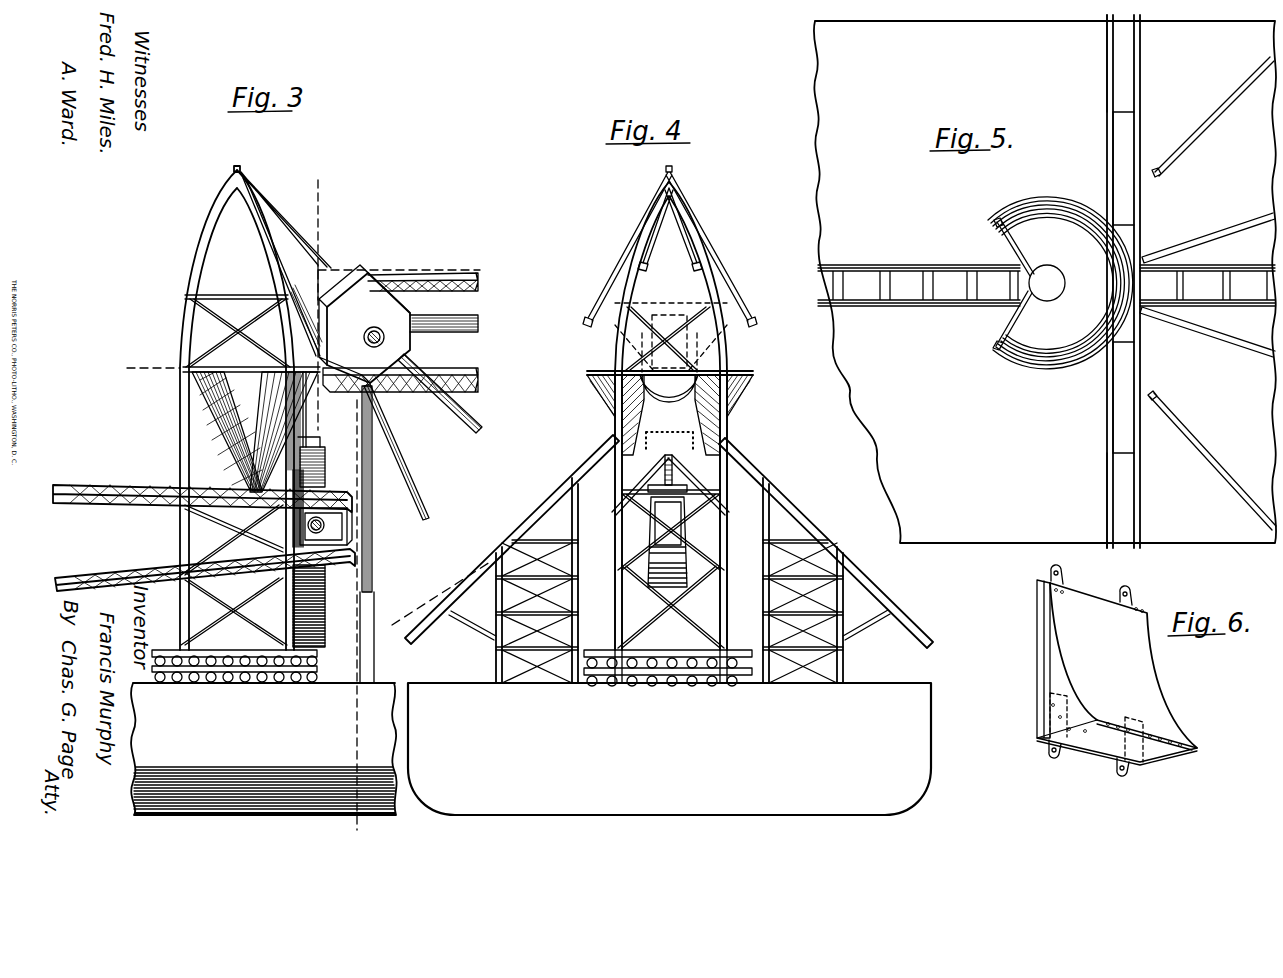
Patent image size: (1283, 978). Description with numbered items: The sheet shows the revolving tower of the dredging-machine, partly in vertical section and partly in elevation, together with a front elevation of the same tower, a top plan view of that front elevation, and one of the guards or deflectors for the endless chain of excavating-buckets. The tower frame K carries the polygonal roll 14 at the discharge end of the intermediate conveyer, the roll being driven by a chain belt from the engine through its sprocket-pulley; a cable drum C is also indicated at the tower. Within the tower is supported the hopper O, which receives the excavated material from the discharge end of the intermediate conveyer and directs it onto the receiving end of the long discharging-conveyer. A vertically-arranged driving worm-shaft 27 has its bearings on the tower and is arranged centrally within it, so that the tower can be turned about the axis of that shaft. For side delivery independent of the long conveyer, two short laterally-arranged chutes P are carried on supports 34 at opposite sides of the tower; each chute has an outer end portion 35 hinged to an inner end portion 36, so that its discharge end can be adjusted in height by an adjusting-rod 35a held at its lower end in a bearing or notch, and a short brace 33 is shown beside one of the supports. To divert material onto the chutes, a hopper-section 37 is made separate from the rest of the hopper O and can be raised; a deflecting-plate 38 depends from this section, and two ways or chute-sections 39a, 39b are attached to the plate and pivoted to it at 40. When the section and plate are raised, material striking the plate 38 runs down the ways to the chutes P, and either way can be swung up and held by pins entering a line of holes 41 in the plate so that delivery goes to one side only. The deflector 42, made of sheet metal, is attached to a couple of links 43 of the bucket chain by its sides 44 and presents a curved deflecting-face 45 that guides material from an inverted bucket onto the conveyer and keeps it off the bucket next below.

In FIG. 3, the tower frame K is at (192, 268).
In FIG. 4, the tower frame K is at (624, 251).
In FIG. 3, the polygonal roll 14 is at (364, 324).
In FIG. 3, the hopper O is at (255, 432).
In FIG. 4, the hopper O is at (659, 415).
In FIG. 5, the hopper O is at (1040, 357).
In FIG. 3, the side delivery-chutes P is at (306, 616).
In FIG. 4, the side delivery-chutes P is at (500, 511).
In FIG. 5, the side delivery-chutes P is at (1096, 474).
In FIG. 3, the cable drum C is at (326, 528).
In FIG. 5, the driving worm-shaft 27 is at (1006, 313).
In FIG. 4, the brace 33 is at (875, 594).
In FIG. 4, the supports 34 is at (497, 652).
In FIG. 4, the outer end portions 35 is at (452, 639).
In FIG. 5, the outer end portions 35 is at (1121, 281).
In FIG. 4, the adjusting-rods 35a is at (472, 614).
In FIG. 4, the inner end portions 36 is at (552, 488).
In FIG. 5, the inner end portions 36 is at (1124, 282).
In FIG. 3, the hopper-section 37 is at (320, 390).
In FIG. 4, the hopper-section 37 is at (666, 314).
In FIG. 5, the hopper-section 37 is at (1046, 285).
In FIG. 3, the deflecting-plate 38 is at (296, 424).
In FIG. 4, the deflecting-plate 38 is at (669, 406).
In FIG. 4, the ways or chute-sections 39a is at (623, 504).
In FIG. 5, the ways or chute-sections 39a is at (1130, 323).
In FIG. 3, the ways or chute-sections 39b is at (312, 440).
In FIG. 4, the ways or chute-sections 39b is at (715, 502).
In FIG. 5, the ways or chute-sections 39b is at (1125, 238).
In FIG. 3, the pivot 40 is at (326, 463).
In FIG. 4, the pivot 40 is at (670, 449).
In FIG. 4, the line of holes 41 is at (716, 441).
In FIG. 6, the guards or deflectors 42 is at (1123, 665).
In FIG. 6, the links 43 is at (1086, 677).
In FIG. 6, the sides 44 is at (1055, 674).
In FIG. 6, the curved deflecting-face 45 is at (1116, 676).